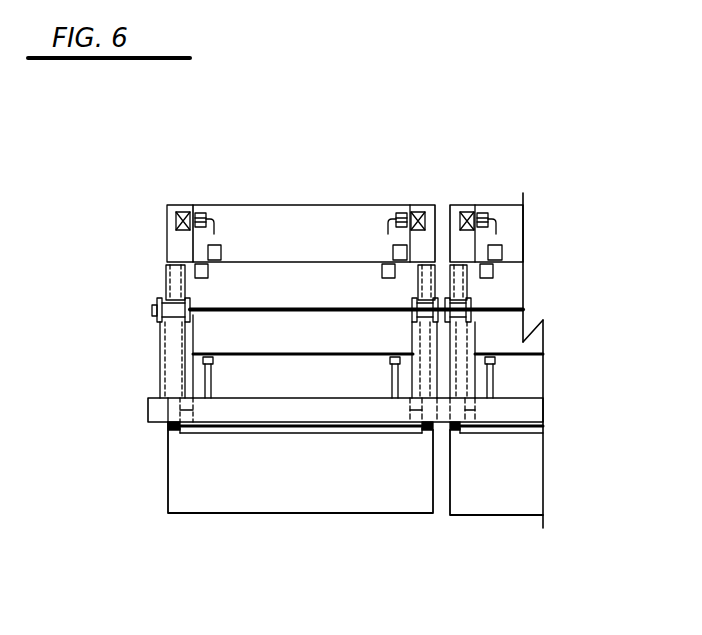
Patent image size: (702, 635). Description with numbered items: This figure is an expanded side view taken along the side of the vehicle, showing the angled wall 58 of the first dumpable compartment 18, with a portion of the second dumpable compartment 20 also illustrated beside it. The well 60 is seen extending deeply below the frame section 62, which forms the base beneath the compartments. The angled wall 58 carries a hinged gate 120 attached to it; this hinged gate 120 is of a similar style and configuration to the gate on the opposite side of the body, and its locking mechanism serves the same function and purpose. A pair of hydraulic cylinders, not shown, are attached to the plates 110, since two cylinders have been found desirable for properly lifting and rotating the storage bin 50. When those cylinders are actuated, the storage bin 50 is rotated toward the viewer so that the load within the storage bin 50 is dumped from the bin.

The first dumpable compartment 18 is at (352, 207).
The second dumpable compartment 20 is at (493, 200).
The storage bin 50 is at (327, 178).
The angled wall 58 is at (212, 298).
The well 60 is at (313, 483).
The frame section 62 is at (150, 417).
The plate 110 is at (392, 386).
The hinged gate 120 is at (283, 228).